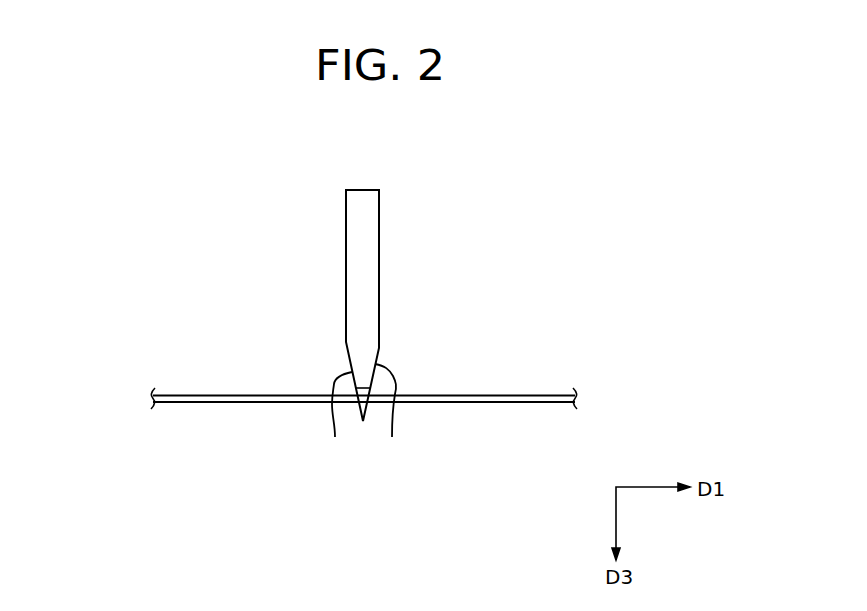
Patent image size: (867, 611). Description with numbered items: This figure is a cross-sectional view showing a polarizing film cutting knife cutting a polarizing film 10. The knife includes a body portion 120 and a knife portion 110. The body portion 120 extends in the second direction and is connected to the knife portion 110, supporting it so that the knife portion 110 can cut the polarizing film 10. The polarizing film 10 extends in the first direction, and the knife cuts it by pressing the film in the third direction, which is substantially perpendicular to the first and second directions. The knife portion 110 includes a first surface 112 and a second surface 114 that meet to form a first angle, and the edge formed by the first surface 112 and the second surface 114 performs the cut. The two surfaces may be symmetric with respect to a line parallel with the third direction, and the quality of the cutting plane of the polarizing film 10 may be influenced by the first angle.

The polarizing film 10 is at (500, 398).
The knife portion 110 is at (365, 432).
The first surface 112 is at (333, 418).
The second surface 114 is at (394, 414).
The body portion 120 is at (367, 240).